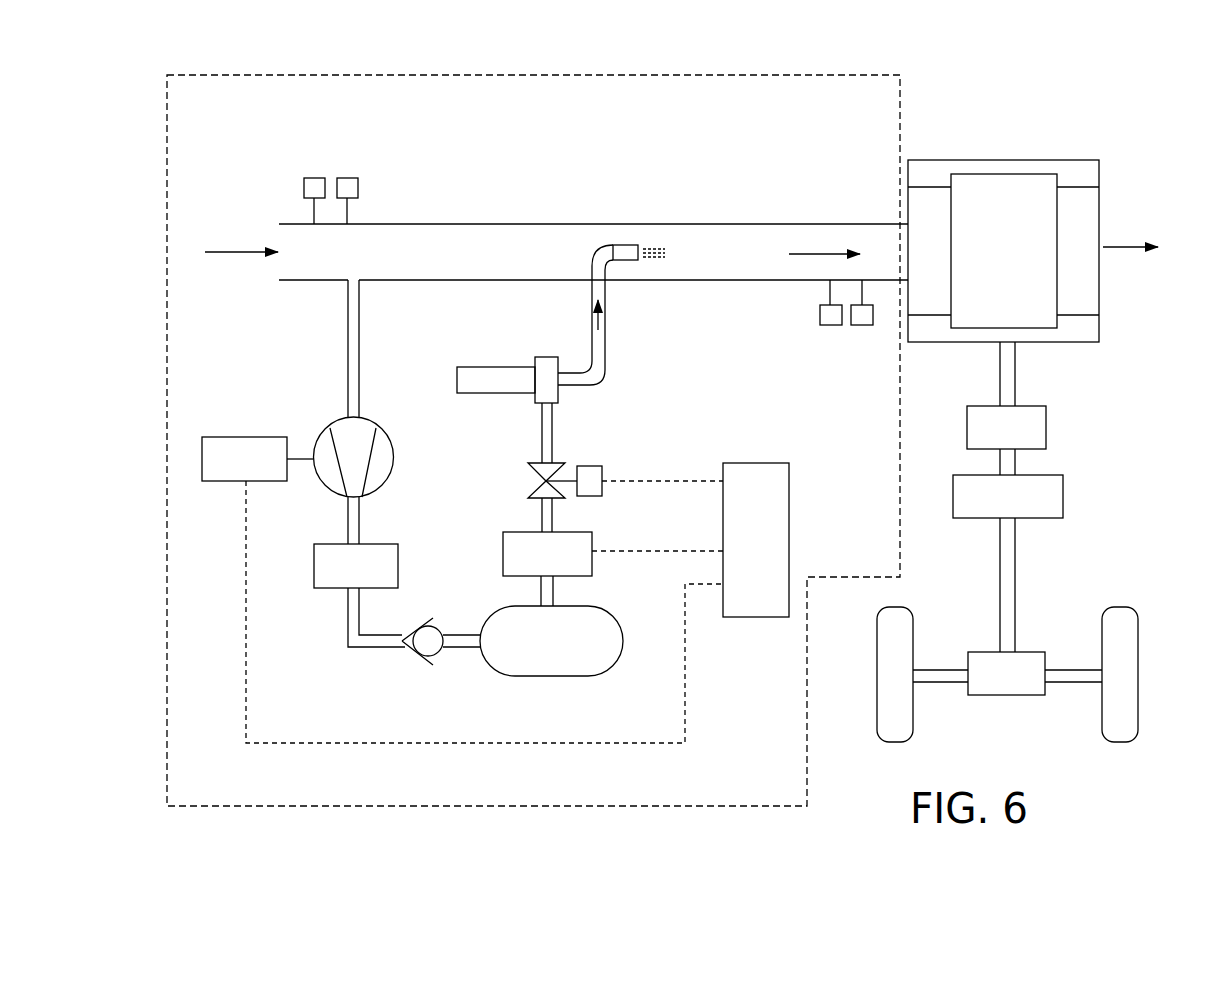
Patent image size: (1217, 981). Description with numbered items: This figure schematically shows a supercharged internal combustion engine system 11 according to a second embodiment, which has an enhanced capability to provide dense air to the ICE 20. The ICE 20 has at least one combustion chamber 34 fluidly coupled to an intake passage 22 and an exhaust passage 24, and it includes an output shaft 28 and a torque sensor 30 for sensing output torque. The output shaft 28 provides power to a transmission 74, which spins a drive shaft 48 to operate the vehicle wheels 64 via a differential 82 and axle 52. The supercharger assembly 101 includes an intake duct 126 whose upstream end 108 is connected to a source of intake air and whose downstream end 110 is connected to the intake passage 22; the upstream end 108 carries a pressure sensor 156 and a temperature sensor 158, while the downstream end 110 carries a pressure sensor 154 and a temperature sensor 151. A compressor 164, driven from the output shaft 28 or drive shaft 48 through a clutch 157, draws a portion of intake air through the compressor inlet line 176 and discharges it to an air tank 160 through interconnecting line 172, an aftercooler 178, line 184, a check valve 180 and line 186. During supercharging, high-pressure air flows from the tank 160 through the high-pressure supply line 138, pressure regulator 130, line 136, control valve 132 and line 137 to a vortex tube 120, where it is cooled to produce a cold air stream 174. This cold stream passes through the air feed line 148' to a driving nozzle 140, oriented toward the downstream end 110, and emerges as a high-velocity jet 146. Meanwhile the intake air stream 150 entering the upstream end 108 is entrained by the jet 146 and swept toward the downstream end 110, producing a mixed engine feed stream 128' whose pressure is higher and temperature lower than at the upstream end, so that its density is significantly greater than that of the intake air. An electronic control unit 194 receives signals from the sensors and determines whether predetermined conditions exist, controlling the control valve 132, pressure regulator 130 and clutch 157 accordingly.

The supercharged ICE system 11 is at (1108, 84).
The ICE 20 is at (986, 156).
The intake passage 22 is at (929, 251).
The exhaust passage 24 is at (1078, 251).
The combustion chamber 34 is at (1004, 251).
The output shaft 28 is at (1017, 383).
The torque sensor 30 is at (1006, 427).
The transmission 74 is at (1008, 496).
The drive shaft 48 is at (1016, 578).
The differential 82 is at (1006, 673).
The axle 52 is at (938, 668).
The vehicle wheels 64 is at (913, 705).
The supercharger assembly 101 is at (528, 72).
The upstream end 108 is at (295, 252).
The downstream end 110 is at (886, 250).
The intake duct 126 is at (371, 223).
The intake air stream 150 is at (233, 252).
The mixed engine feed stream 128' is at (824, 200).
The pressure sensor 156 is at (313, 178).
The temperature sensor 158 is at (347, 178).
The pressure sensor 154 is at (833, 326).
The temperature sensor 151 is at (857, 326).
The driving nozzle 140 is at (630, 243).
The high-velocity jet 146 is at (656, 245).
The cold air stream 174 is at (600, 310).
The air feed line 148' is at (648, 386).
The vortex tube 120 is at (503, 394).
The interconnecting line 137 is at (540, 442).
The control valve 132 is at (537, 483).
The interconnecting line 136 is at (553, 513).
The pressure regulator 130 is at (613, 554).
The high-pressure air supply line 138 is at (553, 588).
The air tank 160 is at (551, 641).
The interconnecting line 186 is at (467, 633).
The check valve 180 is at (415, 650).
The interconnecting line 184 is at (347, 625).
The aftercooler 178 is at (356, 566).
The interconnecting line 172 is at (360, 512).
The compressor 164 is at (325, 430).
The compressor inlet line 176 is at (347, 378).
The clutch 157 is at (462, 590).
The electronic control unit 194 is at (756, 540).